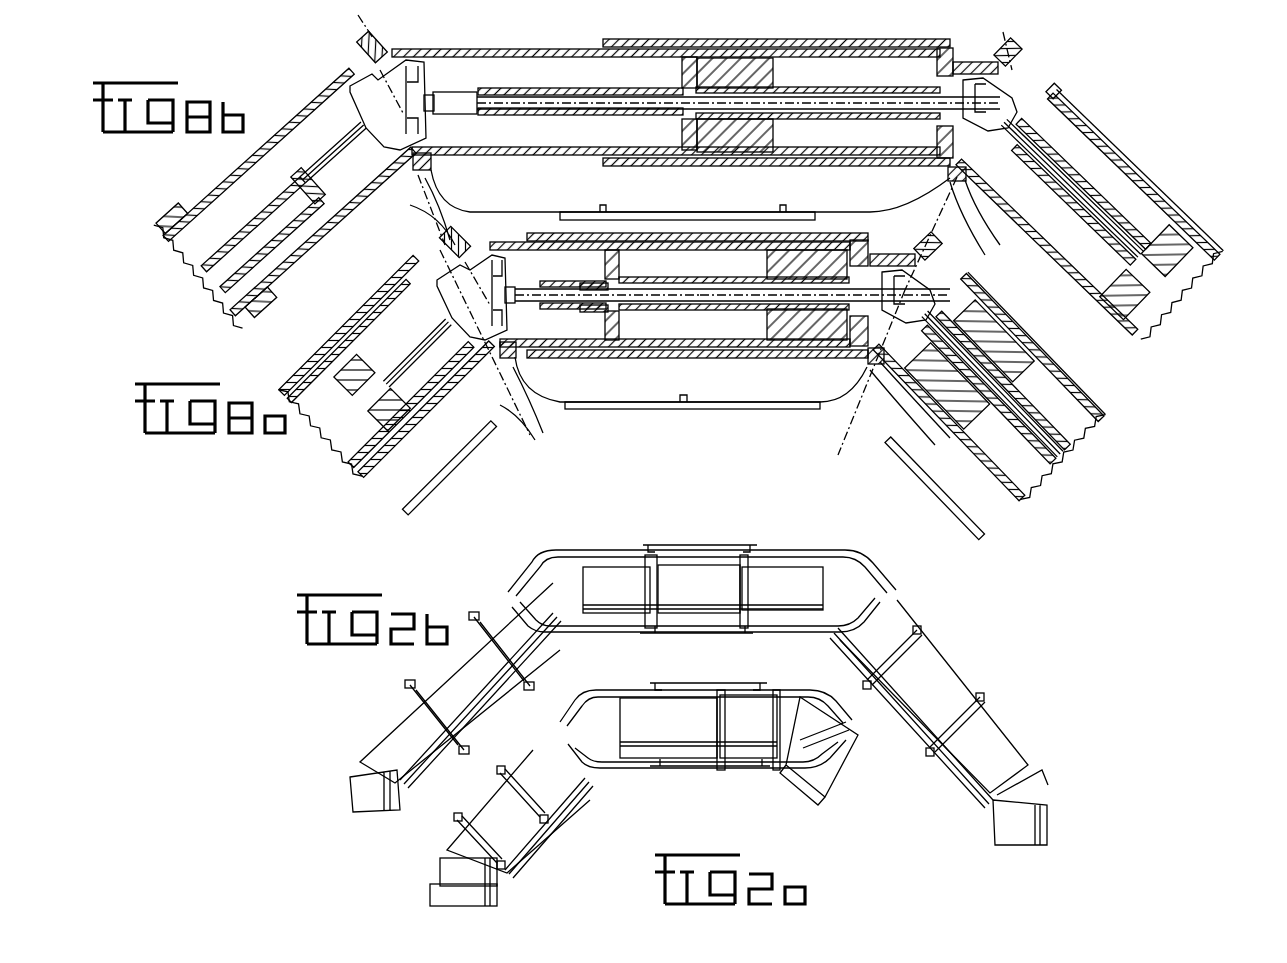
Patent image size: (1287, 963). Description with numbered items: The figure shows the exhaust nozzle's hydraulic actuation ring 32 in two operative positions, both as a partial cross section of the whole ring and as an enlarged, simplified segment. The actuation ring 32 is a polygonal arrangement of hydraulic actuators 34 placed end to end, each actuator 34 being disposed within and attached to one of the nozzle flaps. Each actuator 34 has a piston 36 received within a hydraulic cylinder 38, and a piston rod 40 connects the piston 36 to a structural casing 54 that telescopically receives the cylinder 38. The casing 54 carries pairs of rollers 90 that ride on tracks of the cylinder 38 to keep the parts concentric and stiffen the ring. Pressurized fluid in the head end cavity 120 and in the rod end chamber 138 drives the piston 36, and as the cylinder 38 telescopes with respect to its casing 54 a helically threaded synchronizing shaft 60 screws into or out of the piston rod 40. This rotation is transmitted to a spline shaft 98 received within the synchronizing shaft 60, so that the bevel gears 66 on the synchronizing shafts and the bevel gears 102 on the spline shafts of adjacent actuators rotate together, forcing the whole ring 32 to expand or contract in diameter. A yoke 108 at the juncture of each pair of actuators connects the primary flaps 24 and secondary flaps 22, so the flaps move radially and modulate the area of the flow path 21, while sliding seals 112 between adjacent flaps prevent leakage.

In FIG. 2a, the flow path 21 is at (728, 829).
In FIG. 2b, the secondary flaps 22 is at (600, 548).
In FIG. 2a, the secondary flaps 22 is at (612, 682).
In FIG. 8b, the primary flaps 24 is at (470, 214).
In FIG. 8a, the primary flaps 24 is at (538, 422).
In FIG. 2a, the primary flaps 24 is at (610, 775).
In FIG. 8b, the hydraulic actuation ring 32 is at (903, 38).
In FIG. 8a, the hydraulic actuation ring 32 is at (823, 206).
In FIG. 2b, the hydraulic actuation ring 32 is at (804, 531).
In FIG. 2a, the hydraulic actuation ring 32 is at (776, 669).
In FIG. 8b, the hydraulic actuator 34 is at (650, 168).
In FIG. 8a, the hydraulic actuator 34 is at (652, 363).
In FIG. 2b, the hydraulic actuator 34 is at (673, 559).
In FIG. 2a, the hydraulic actuator 34 is at (666, 694).
In FIG. 8b, the piston 36 is at (682, 68).
In FIG. 8a, the piston 36 is at (620, 260).
In FIG. 8b, the hydraulic cylinder 38 is at (519, 58).
In FIG. 8a, the hydraulic cylinder 38 is at (541, 252).
In FIG. 8b, the piston rod 40 is at (853, 79).
In FIG. 8a, the piston rod 40 is at (691, 279).
In FIG. 8b, the structural casing 54 is at (762, 40).
In FIG. 8a, the structural casing 54 is at (726, 362).
In FIG. 2b, the structural casing 54 is at (700, 580).
In FIG. 2a, the structural casing 54 is at (650, 742).
In FIG. 8b, the synchronizing shaft 60 is at (456, 118).
In FIG. 8a, the synchronizing shaft 60 is at (524, 310).
In FIG. 8b, the bevel gear 66 is at (402, 110).
In FIG. 8a, the bevel gear 66 is at (480, 305).
In FIG. 2b, the rollers 90 is at (405, 690).
In FIG. 8b, the spline shaft 98 is at (842, 112).
In FIG. 8a, the spline shaft 98 is at (822, 300).
In FIG. 8b, the bevel gear 102 is at (1012, 88).
In FIG. 8a, the bevel gear 102 is at (928, 283).
In FIG. 8b, the yoke 108 is at (446, 192).
In FIG. 8a, the yoke 108 is at (528, 390).
In FIG. 8b, the sliding seals 112 is at (676, 211).
In FIG. 8a, the sliding seals 112 is at (685, 420).
In FIG. 2b, the sliding seals 112 is at (665, 638).
In FIG. 2a, the sliding seals 112 is at (688, 770).
In FIG. 8b, the head end cavity 120 is at (597, 139).
In FIG. 8a, the head end cavity 120 is at (597, 332).
In FIG. 8b, the chamber 138 is at (826, 149).
In FIG. 8a, the chamber 138 is at (711, 332).